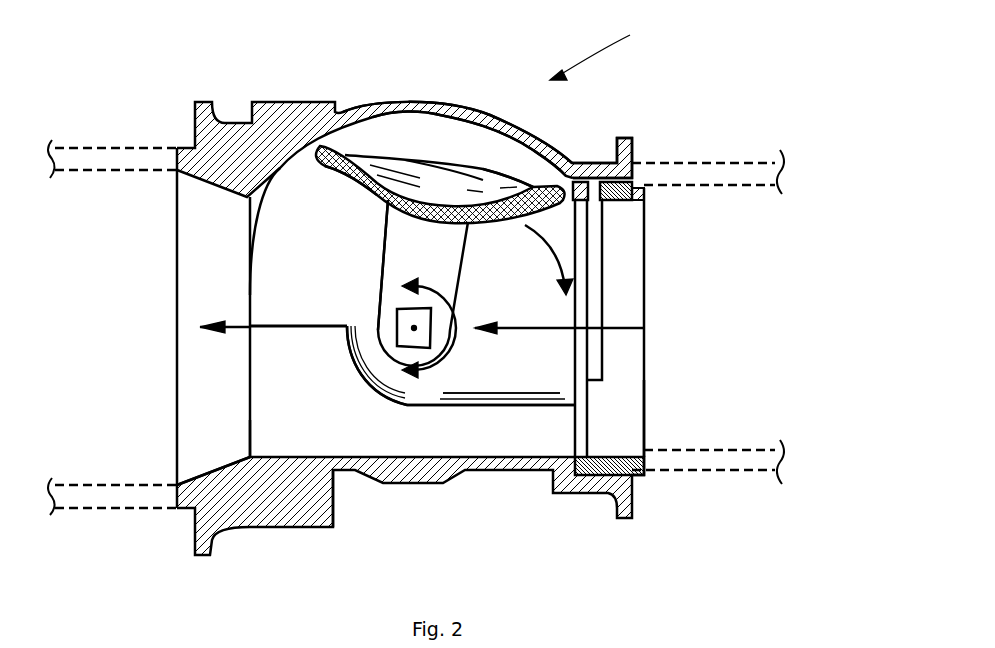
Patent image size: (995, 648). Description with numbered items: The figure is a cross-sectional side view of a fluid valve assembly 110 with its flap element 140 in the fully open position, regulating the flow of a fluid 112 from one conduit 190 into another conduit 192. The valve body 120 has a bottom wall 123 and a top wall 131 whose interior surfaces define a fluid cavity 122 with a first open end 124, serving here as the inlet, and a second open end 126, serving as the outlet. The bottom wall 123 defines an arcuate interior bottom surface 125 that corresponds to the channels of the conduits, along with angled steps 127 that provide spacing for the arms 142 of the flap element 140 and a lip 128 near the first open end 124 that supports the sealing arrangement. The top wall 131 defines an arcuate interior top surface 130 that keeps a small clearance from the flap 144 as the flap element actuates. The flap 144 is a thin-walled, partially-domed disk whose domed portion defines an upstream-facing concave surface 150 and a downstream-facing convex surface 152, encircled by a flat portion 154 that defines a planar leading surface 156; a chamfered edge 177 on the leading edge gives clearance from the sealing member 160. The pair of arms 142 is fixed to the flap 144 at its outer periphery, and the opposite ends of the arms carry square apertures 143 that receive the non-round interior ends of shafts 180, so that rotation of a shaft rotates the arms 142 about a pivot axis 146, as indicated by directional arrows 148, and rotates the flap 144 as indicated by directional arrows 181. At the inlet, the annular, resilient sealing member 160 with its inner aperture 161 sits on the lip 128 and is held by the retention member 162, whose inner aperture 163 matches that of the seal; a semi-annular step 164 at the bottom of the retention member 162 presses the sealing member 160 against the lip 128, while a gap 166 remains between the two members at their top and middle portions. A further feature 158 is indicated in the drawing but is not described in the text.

The fluid valve assembly 110 is at (590, 47).
The fluid 112 is at (240, 332).
The valve body 120 is at (300, 528).
The fluid cavity 122 is at (440, 399).
The bottom wall 123 is at (313, 497).
The first open end 124 is at (623, 200).
The interior bottom surface 125 is at (283, 455).
The second open end 126 is at (203, 470).
The angled steps 127 is at (548, 393).
The lip 128 is at (625, 458).
The interior top surface 130 is at (280, 167).
The top wall 131 is at (445, 108).
The flap element 140 is at (379, 301).
The arms 142 is at (383, 262).
The apertures 143 is at (402, 342).
The flap 144 is at (490, 170).
The pivot axis 146 is at (457, 337).
The directional arrows 148 is at (437, 363).
The concave surface 150 is at (388, 188).
The convex surface 152 is at (378, 208).
The flat portion 154 is at (345, 153).
The leading surface 156 is at (367, 163).
The lens cavity 158 is at (497, 199).
The sealing member 160 is at (580, 308).
The inner aperture 161 is at (583, 207).
The retention member 162 is at (617, 353).
The inner aperture 163 is at (625, 428).
The semi-annular step 164 is at (597, 390).
The gap 166 is at (607, 203).
The chamfered edge 177 is at (590, 163).
The shafts 180 is at (363, 328).
The directional arrows 181 is at (538, 247).
The conduit 190 is at (713, 163).
The conduit 192 is at (102, 148).